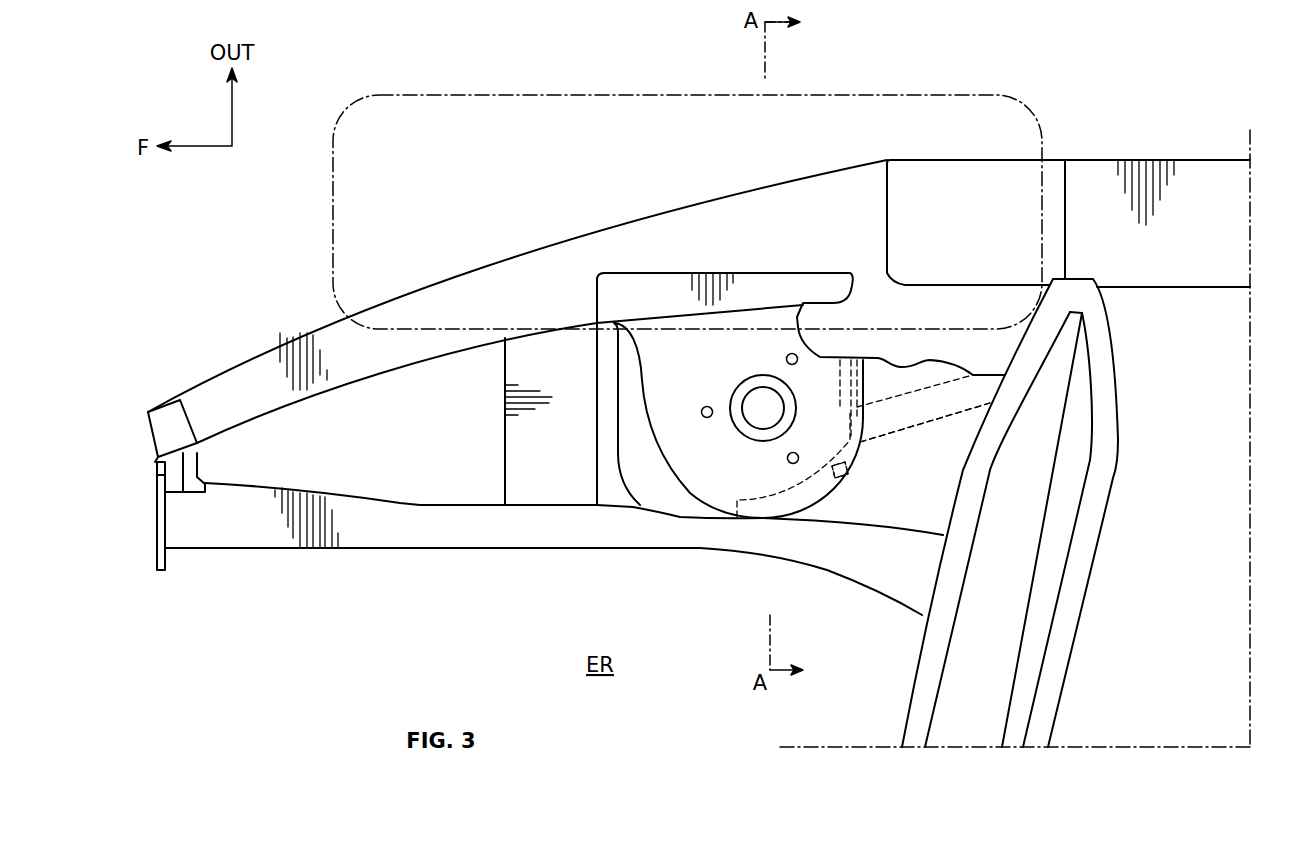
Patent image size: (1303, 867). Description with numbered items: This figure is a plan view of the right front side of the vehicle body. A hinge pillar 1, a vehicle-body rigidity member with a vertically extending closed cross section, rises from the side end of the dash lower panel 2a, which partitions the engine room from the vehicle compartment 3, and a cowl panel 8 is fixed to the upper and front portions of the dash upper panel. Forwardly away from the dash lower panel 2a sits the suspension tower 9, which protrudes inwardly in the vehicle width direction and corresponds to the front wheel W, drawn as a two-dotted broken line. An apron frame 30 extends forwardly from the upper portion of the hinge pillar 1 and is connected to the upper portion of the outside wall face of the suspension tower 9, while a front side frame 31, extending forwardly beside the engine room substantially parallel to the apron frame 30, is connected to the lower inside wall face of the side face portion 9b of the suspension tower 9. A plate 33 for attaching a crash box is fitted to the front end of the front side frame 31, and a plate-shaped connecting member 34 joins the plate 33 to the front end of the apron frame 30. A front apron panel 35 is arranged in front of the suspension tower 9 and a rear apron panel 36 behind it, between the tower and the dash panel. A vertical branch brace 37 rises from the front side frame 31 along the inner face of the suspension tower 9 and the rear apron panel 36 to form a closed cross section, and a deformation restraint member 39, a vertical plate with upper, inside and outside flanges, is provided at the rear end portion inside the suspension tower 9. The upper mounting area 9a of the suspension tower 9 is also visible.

The hinge pillar 1 is at (1210, 223).
The dash lower panel 2a is at (1215, 573).
The vehicle compartment 3 is at (1145, 639).
The cowl panel 8 is at (953, 695).
The suspension tower 9 is at (707, 355).
The boss 9a is at (763, 376).
The side face portion 9b is at (748, 517).
The apron frame 30 is at (265, 362).
The front side frame 31 is at (402, 533).
The plate 33 is at (158, 575).
The plate-shaped connecting member 34 is at (168, 428).
The front apron panel 35 is at (556, 482).
The rear apron panel 36 is at (913, 510).
The vertical branch brace 37 is at (810, 495).
The deformation restraint member 39 is at (850, 468).
The front wheel W is at (636, 94).